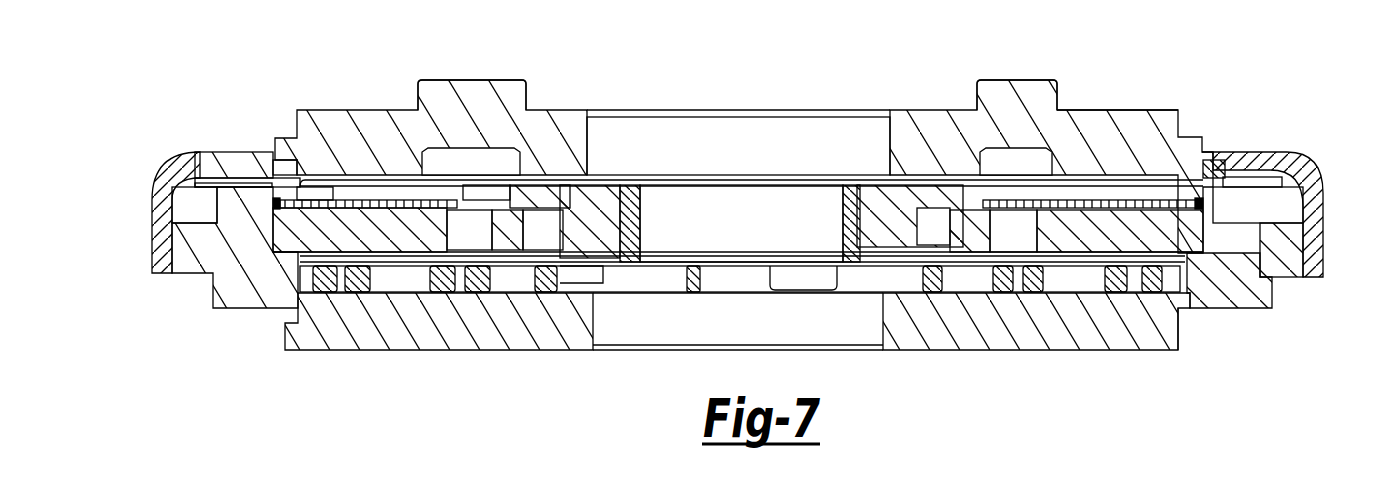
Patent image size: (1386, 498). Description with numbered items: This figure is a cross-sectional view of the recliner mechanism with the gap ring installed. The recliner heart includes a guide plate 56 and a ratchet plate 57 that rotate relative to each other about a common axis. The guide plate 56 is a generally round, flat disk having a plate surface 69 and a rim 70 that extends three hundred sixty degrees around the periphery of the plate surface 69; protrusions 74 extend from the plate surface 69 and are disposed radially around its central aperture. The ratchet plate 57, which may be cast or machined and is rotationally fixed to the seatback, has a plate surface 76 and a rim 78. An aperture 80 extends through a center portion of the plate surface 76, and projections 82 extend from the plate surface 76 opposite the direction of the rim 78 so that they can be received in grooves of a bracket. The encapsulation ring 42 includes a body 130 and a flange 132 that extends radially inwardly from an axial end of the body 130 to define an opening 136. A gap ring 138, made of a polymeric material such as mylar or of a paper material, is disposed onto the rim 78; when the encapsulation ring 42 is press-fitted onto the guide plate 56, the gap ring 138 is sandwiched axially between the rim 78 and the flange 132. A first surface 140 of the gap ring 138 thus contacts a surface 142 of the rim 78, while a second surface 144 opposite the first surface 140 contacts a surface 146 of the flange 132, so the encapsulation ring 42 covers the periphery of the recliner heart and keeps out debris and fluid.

The encapsulation ring 42 is at (1302, 140).
The guide plate 56 is at (1213, 318).
The ratchet plate 57 is at (1130, 83).
The plate surface 69 is at (1243, 300).
The rim 70 is at (1283, 268).
The protrusions 74 is at (1028, 335).
The plate surface 76 is at (1093, 110).
The rim 78 is at (1248, 207).
The aperture 80 is at (740, 137).
The projections 82 is at (484, 80).
The body 130 is at (168, 207).
The flange 132 is at (218, 157).
The opening 136 is at (1210, 170).
The gap ring 138 is at (203, 200).
The first surface 140 is at (192, 193).
The surface 142 is at (223, 185).
The second surface 144 is at (202, 182).
The surface 146 is at (267, 176).